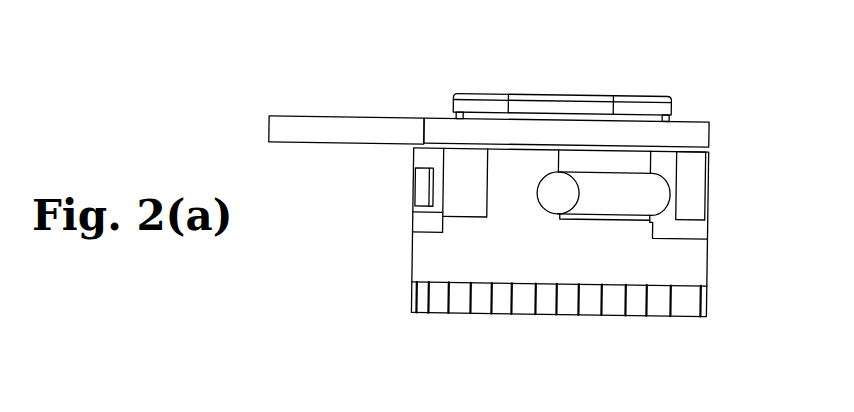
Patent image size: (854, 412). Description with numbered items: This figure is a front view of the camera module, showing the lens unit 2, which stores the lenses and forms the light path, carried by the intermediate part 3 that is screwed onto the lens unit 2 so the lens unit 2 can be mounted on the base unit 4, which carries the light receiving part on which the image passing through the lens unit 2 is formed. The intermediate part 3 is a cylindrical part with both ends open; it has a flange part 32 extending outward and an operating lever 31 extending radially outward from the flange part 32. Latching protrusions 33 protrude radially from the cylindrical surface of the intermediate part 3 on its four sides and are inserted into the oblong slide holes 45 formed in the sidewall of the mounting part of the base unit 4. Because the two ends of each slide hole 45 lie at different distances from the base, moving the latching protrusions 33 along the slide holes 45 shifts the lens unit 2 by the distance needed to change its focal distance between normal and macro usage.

The lens unit 2 is at (588, 104).
The intermediate part 3 is at (475, 128).
The operating lever 31 is at (322, 129).
The flange part 32 is at (680, 130).
The base unit 4 is at (678, 258).
The latching protrusions 33 is at (552, 202).
The slide holes 45 is at (427, 202).